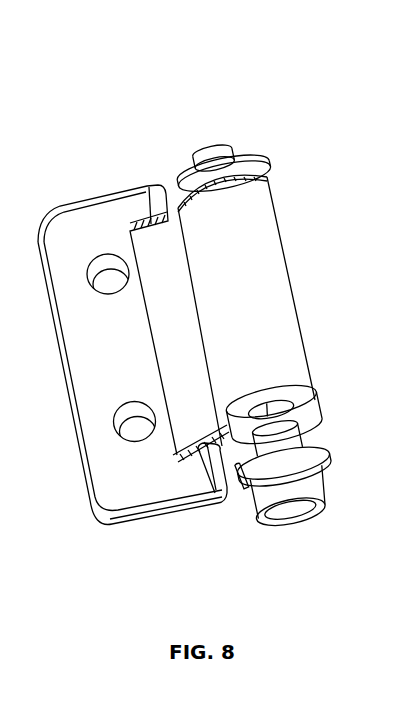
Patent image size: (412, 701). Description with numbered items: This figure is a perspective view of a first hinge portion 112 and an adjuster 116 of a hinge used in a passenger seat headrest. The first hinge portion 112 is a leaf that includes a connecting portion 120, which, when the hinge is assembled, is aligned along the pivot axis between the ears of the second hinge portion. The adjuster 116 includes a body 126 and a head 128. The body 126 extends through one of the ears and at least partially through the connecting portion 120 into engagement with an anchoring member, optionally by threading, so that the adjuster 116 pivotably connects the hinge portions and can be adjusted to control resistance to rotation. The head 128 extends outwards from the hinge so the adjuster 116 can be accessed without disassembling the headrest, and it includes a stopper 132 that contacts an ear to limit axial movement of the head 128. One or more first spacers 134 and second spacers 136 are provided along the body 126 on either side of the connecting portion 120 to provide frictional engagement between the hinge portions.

The first hinge portion 112 is at (80, 233).
The adjuster 116 is at (300, 507).
The connecting portion 120 is at (275, 307).
The body 126 is at (213, 150).
The head 128 is at (277, 513).
The stopper 132 is at (240, 483).
The first spacer 134 is at (248, 168).
The second spacer 136 is at (302, 425).